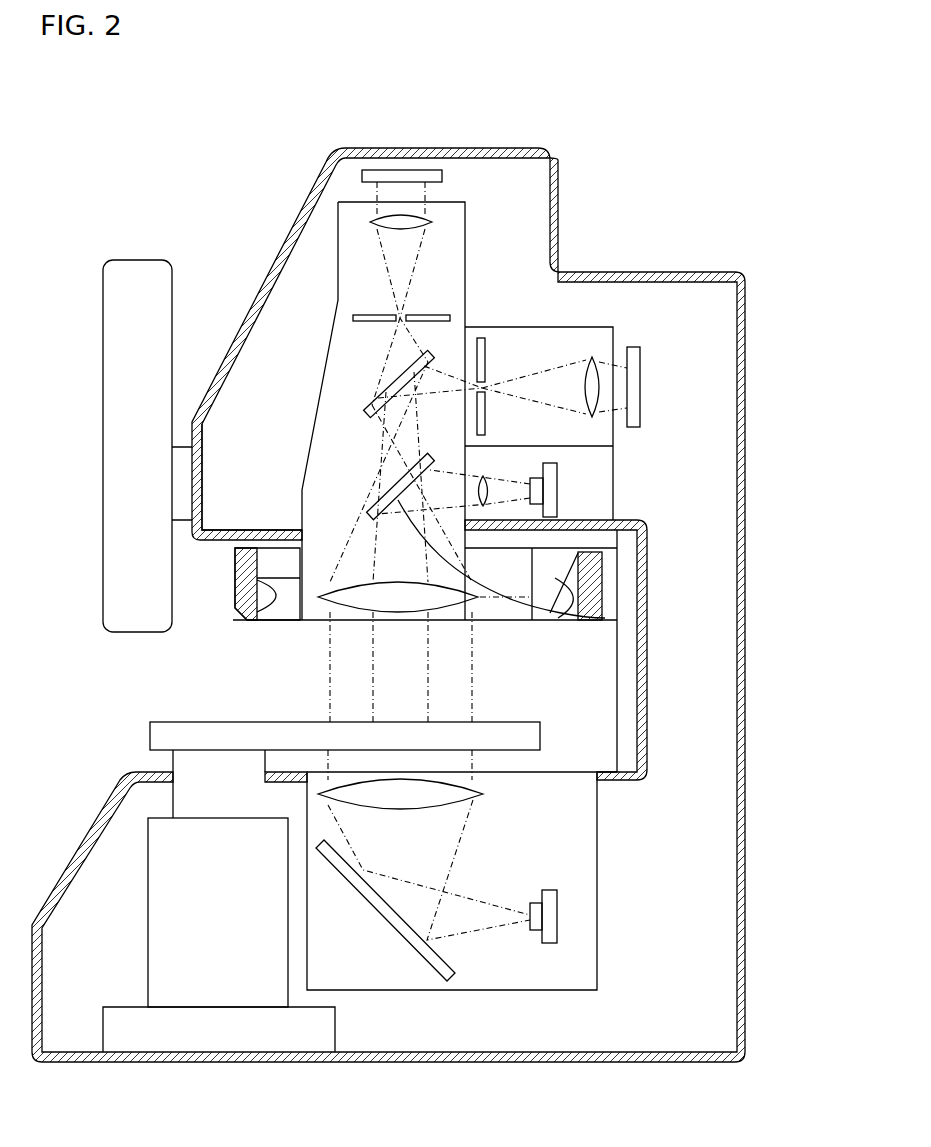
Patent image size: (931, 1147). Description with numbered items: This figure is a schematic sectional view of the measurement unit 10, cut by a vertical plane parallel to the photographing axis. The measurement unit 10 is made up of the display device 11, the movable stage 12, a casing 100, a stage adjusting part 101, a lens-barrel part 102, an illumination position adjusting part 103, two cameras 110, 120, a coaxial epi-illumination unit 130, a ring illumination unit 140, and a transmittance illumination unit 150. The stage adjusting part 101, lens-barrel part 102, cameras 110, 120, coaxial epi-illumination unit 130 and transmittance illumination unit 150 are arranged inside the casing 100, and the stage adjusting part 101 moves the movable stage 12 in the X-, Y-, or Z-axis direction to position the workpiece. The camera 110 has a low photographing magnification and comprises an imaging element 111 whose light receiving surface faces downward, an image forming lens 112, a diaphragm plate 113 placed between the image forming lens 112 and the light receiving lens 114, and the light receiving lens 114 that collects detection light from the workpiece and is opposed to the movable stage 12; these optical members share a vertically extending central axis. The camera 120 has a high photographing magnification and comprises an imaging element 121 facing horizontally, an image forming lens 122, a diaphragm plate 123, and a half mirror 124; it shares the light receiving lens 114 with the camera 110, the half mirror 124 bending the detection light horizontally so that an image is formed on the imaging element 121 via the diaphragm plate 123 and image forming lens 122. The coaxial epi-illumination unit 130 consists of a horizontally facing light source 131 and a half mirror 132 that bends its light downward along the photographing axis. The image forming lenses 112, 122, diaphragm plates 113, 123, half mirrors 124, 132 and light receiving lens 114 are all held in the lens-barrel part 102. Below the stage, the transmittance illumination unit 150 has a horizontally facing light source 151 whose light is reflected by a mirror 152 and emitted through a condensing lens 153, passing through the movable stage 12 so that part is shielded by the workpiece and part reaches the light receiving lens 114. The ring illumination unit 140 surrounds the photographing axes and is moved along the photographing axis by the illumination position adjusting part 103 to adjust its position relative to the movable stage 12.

The measurement unit 10 is at (778, 101).
The display device 11 is at (142, 260).
The movable stage 12 is at (160, 722).
The casing 100 is at (745, 311).
The stage adjusting part 101 is at (148, 916).
The lens-barrel part 102 is at (302, 528).
The illumination position adjusting part 103 is at (617, 668).
The camera 110 is at (262, 150).
The imaging element 111 is at (362, 177).
The image forming lens 112 is at (380, 220).
The diaphragm plate 113 is at (370, 316).
The light receiving lens 114 is at (346, 584).
The camera 120 is at (798, 388).
The imaging element 121 is at (641, 413).
The image forming lens 122 is at (596, 416).
The diaphragm plate 123 is at (486, 417).
The half mirror 124 is at (396, 402).
The coaxial epi-illumination unit 130 is at (797, 577).
The light source 131 is at (557, 497).
The half mirror 132 is at (602, 598).
The ring illumination unit 140 is at (240, 620).
The transmittance illumination unit 150 is at (796, 868).
The light source 151 is at (557, 917).
The mirror 152 is at (455, 970).
The condensing lens 153 is at (480, 797).